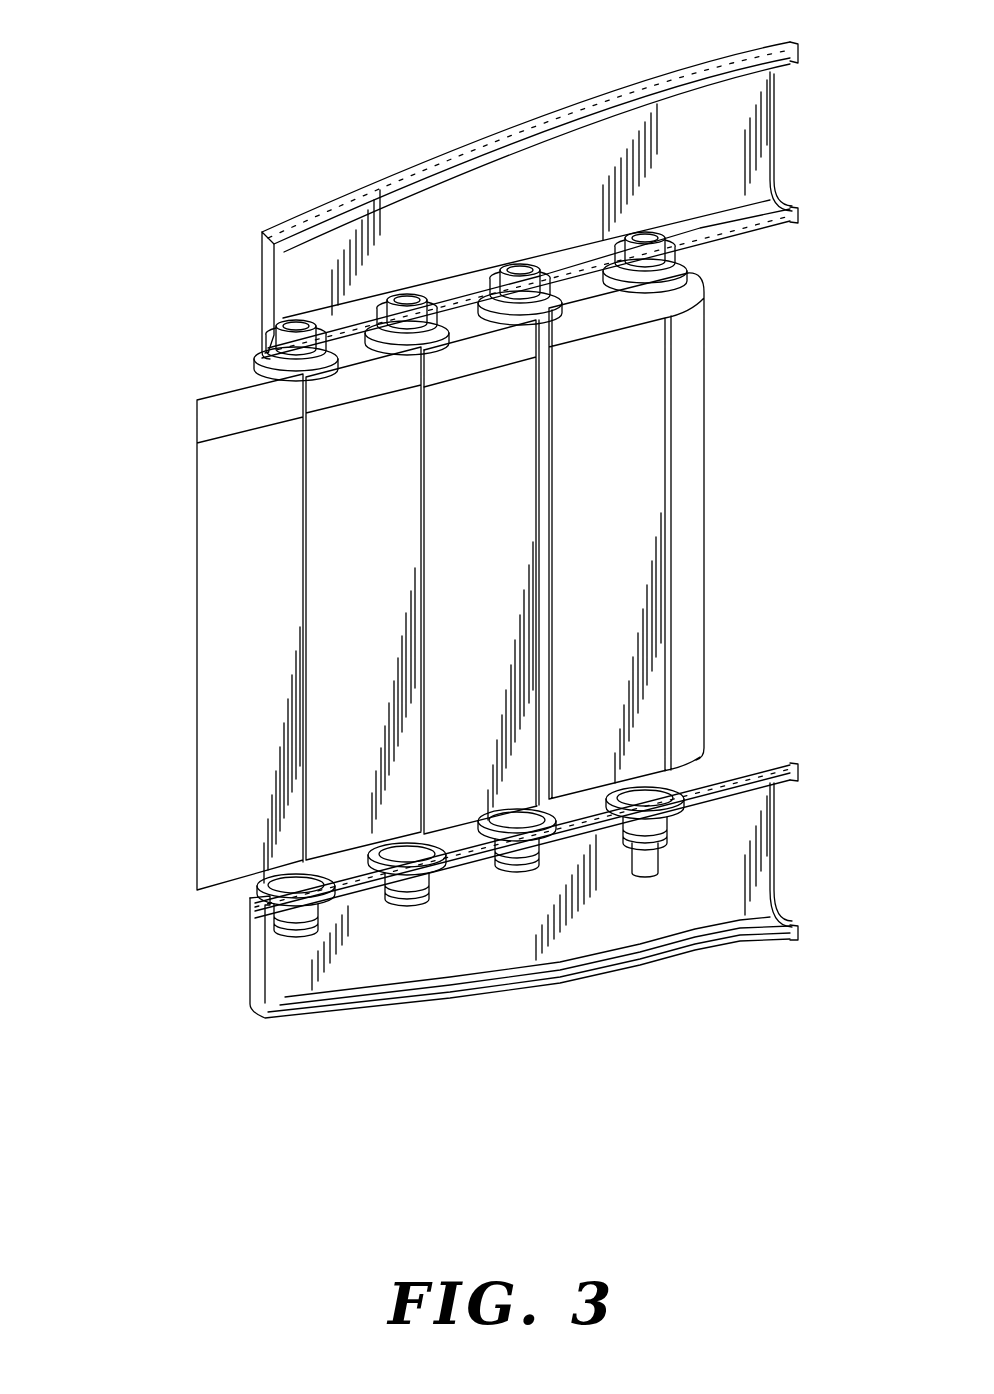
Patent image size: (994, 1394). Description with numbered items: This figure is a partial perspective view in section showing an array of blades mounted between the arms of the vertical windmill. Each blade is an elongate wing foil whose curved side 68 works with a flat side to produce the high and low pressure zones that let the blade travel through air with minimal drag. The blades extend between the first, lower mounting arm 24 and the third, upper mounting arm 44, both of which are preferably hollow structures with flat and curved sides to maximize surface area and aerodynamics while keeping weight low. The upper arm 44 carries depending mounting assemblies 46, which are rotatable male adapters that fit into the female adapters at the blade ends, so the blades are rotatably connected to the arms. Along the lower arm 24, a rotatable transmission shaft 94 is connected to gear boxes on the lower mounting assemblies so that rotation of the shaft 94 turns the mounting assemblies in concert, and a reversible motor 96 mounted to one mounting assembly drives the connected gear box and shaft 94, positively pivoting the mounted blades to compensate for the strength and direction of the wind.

The first (lower) mounting arm 24 is at (607, 978).
The third (upper) mounting arm 44 is at (542, 104).
The mounting assembly 46 is at (256, 358).
The curved side 68 is at (313, 723).
The rotatable transmission shaft 94 is at (457, 868).
The reversible motor 96 is at (660, 857).